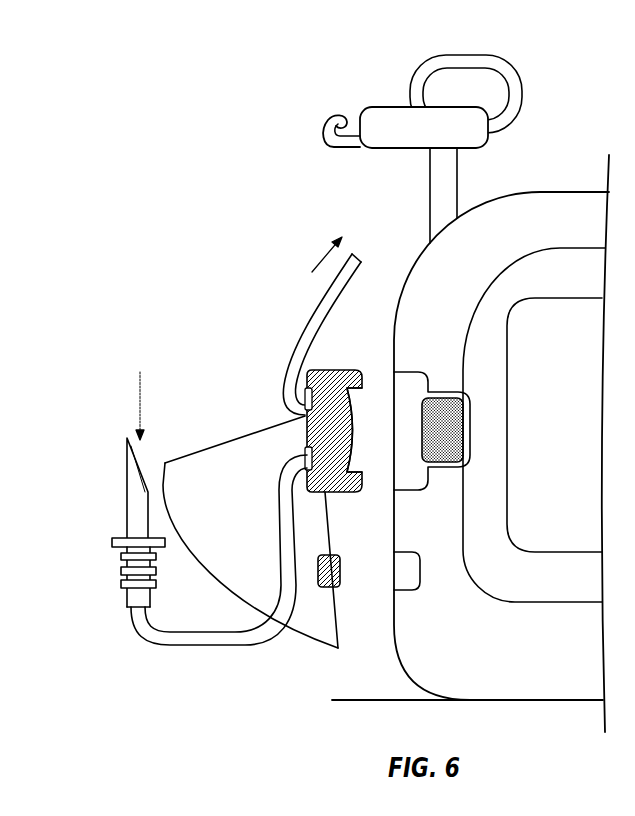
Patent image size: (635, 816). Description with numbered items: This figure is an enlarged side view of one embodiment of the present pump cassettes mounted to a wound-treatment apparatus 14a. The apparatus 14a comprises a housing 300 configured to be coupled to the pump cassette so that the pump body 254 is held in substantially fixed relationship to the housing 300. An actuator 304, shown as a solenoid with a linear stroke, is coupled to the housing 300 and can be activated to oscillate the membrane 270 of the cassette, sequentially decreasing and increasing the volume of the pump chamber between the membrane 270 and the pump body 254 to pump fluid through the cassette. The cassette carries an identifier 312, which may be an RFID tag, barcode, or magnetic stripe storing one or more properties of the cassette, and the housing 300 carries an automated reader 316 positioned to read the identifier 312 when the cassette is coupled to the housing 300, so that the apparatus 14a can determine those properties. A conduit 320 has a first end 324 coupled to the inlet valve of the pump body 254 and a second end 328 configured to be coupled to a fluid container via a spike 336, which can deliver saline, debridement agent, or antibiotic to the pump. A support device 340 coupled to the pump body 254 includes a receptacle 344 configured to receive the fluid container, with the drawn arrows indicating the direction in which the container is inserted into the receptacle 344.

The wound-treatment apparatus 14a is at (262, 112).
The housing 300 is at (565, 192).
The actuator 304 is at (283, 292).
The membrane 270 is at (355, 425).
The pump body 254 is at (318, 370).
The receptacle 344 is at (240, 395).
The first end 324 is at (282, 457).
The spike 336 is at (138, 500).
The support device 340 is at (248, 535).
The second end 328 is at (128, 617).
The conduit 320 is at (195, 648).
The identifier 312 is at (340, 575).
The automated reader 316 is at (413, 570).